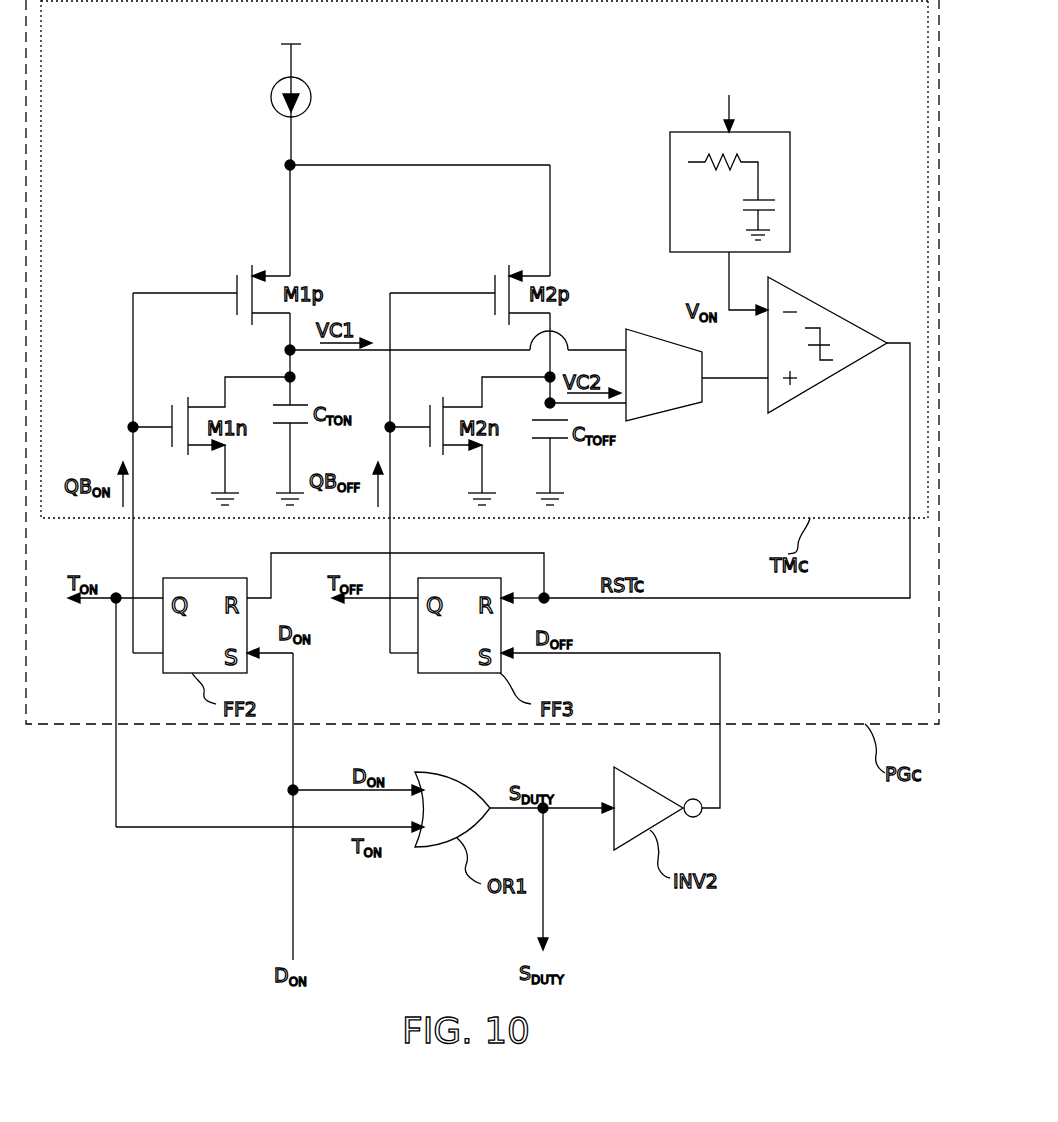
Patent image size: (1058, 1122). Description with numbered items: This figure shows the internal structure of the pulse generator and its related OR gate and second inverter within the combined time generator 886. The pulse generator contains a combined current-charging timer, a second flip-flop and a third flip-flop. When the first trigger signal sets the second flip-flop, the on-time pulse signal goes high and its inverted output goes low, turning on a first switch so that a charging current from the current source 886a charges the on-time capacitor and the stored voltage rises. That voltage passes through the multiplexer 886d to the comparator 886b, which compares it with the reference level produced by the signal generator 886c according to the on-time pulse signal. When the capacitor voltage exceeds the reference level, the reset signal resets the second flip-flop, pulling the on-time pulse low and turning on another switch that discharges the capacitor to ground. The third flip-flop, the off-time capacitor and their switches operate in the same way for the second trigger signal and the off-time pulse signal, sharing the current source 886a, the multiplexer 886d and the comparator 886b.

The combined time generator 886 is at (810, 862).
The current source 886a is at (271, 97).
The comparator 886b is at (848, 320).
The signal generator 886c is at (790, 166).
The multiplexer 886d is at (672, 409).